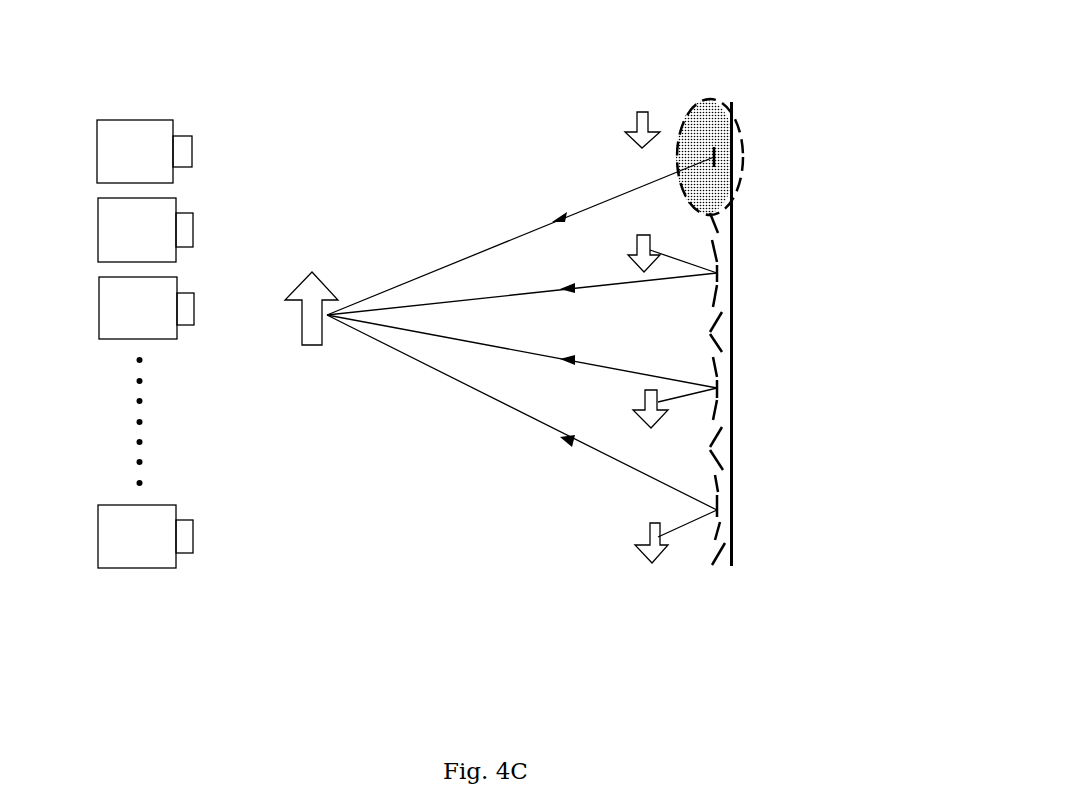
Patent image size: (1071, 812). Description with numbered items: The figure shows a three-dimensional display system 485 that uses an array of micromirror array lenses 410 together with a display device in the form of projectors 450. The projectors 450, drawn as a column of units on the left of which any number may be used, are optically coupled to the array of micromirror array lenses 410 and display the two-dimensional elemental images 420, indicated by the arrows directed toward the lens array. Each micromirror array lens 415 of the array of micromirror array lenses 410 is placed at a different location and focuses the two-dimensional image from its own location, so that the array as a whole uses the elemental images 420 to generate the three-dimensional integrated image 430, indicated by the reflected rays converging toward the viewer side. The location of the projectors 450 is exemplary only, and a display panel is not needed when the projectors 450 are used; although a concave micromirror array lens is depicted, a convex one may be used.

The array of micromirror array lenses 410 is at (720, 572).
The micromirror array lens 415 is at (700, 95).
The two-dimensional image 420 is at (713, 158).
The three-dimensional image 430 is at (312, 293).
The projectors 450 is at (88, 118).
The three-dimensional display system 485 is at (820, 104).